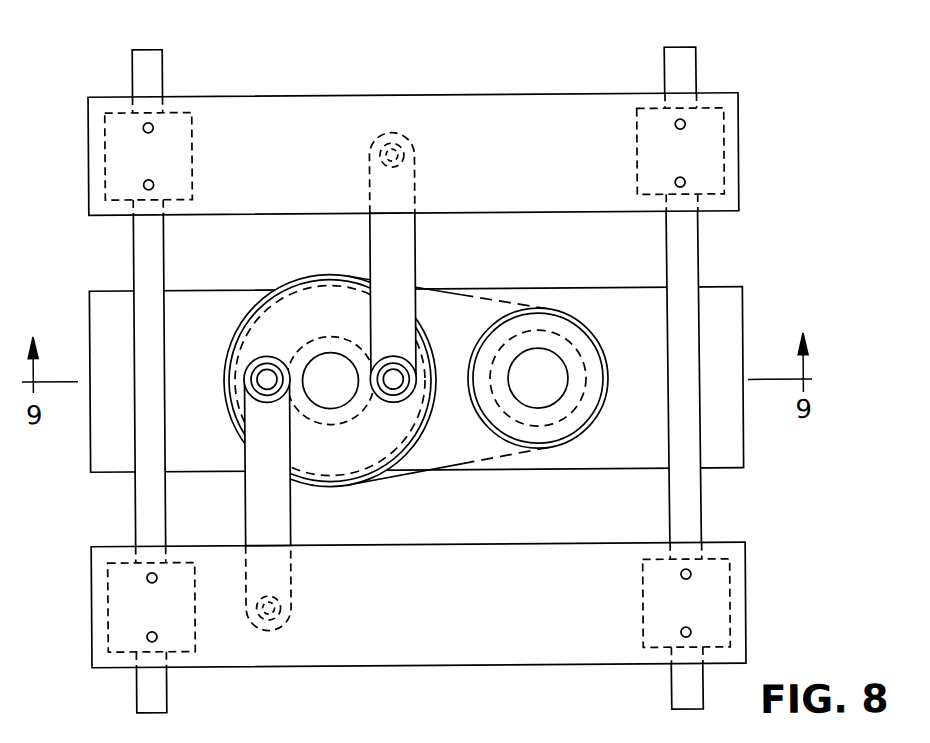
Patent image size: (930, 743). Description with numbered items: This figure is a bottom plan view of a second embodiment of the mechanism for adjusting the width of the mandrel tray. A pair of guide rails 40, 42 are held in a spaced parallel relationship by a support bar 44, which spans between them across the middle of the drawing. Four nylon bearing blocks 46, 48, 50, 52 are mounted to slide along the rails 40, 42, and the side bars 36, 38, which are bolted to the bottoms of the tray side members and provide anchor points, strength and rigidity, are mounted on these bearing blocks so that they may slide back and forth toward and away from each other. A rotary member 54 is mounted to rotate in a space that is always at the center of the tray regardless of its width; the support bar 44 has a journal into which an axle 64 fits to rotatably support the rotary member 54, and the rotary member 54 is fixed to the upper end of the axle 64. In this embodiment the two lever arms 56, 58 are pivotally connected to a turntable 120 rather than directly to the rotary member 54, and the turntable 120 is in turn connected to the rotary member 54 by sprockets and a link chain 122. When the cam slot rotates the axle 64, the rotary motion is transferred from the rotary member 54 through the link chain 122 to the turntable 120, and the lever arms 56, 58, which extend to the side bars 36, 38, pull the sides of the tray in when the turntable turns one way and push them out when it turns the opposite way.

The side bar 36 is at (739, 118).
The side bar 38 is at (747, 587).
The guide rail 40 is at (158, 65).
The guide rail 42 is at (687, 47).
The support bar 44 is at (743, 323).
The nylon bearing block 46 is at (192, 132).
The nylon bearing block 48 is at (193, 650).
The nylon bearing block 50 is at (724, 175).
The nylon bearing block 52 is at (647, 647).
The rotary member 54 is at (563, 310).
The lever arm 56 is at (415, 256).
The lever arm 58 is at (291, 525).
The axle 64 is at (548, 395).
The turntable 120 is at (293, 292).
The link chain 122 is at (432, 470).